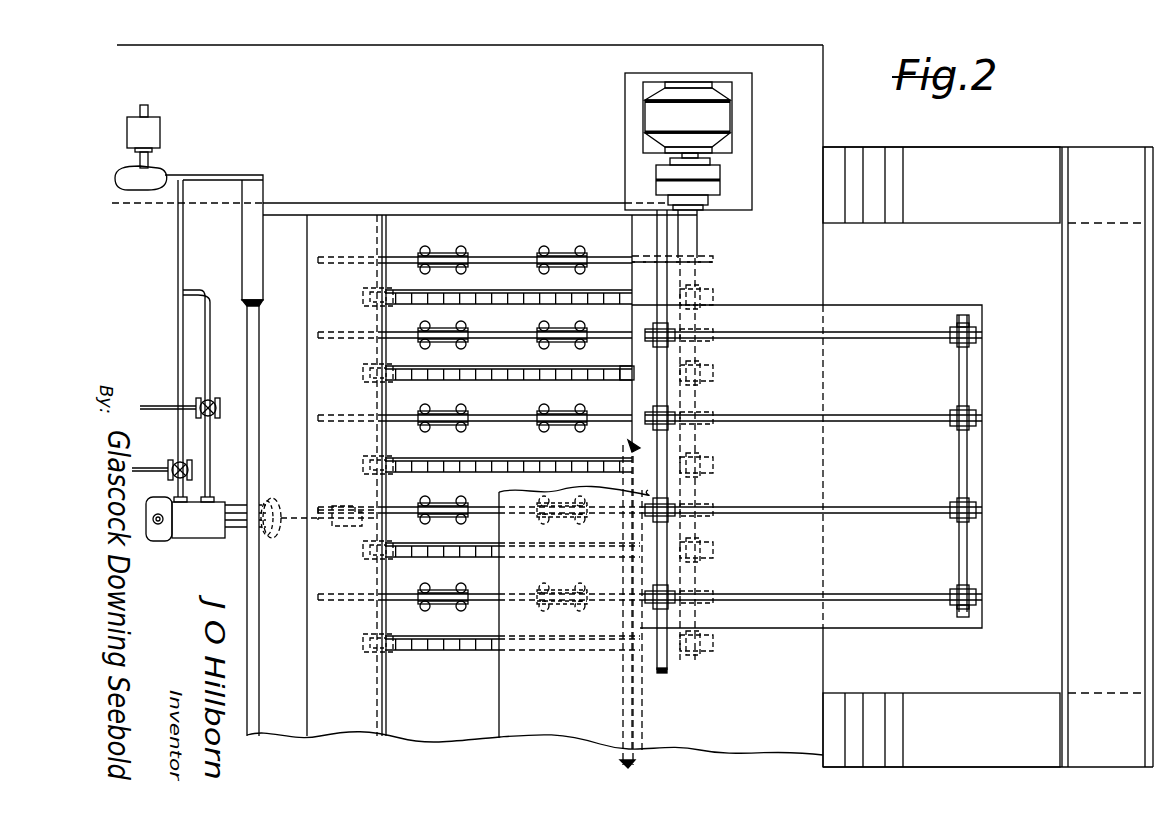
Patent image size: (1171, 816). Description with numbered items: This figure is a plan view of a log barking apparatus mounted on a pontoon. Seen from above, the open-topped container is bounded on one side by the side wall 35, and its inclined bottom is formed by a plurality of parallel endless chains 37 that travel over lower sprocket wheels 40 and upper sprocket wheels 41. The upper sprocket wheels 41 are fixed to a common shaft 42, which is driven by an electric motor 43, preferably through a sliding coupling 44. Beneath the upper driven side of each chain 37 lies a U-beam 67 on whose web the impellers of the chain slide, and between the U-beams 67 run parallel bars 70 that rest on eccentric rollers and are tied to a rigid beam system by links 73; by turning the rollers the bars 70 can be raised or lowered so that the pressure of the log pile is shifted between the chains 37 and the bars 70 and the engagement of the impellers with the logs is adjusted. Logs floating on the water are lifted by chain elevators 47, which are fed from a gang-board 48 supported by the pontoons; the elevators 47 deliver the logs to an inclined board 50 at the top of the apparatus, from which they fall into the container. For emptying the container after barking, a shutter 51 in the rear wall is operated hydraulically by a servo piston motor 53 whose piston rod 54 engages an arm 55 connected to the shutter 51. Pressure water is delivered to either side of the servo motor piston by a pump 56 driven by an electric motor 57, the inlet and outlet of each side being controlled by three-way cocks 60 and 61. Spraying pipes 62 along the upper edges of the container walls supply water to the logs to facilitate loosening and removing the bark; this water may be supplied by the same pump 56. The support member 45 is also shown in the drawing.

The side wall 35 is at (477, 214).
The endless chain 37 is at (494, 292).
The lower sprocket wheel 40 is at (370, 373).
The upper sprocket wheel 41 is at (702, 292).
The common shaft 42 is at (380, 400).
The electric motor 43 is at (725, 110).
The sliding coupling 44 is at (720, 176).
The support member 45 is at (988, 223).
The chain elevator 47 is at (898, 339).
The gang-board 48 is at (1075, 444).
The inclined board 50 is at (538, 738).
The shutter 51 is at (352, 728).
The servo piston motor 53 is at (201, 538).
The piston rod 54 is at (298, 530).
The arm 55 is at (346, 533).
The pump 56 is at (152, 178).
The electric motor 57 is at (160, 130).
The three-way cock 60 is at (173, 462).
The three-way cock 61 is at (213, 402).
The spraying pipe 62 is at (247, 239).
The U-beam 67 is at (619, 379).
The bar 70 is at (512, 325).
The link 73 is at (445, 340).